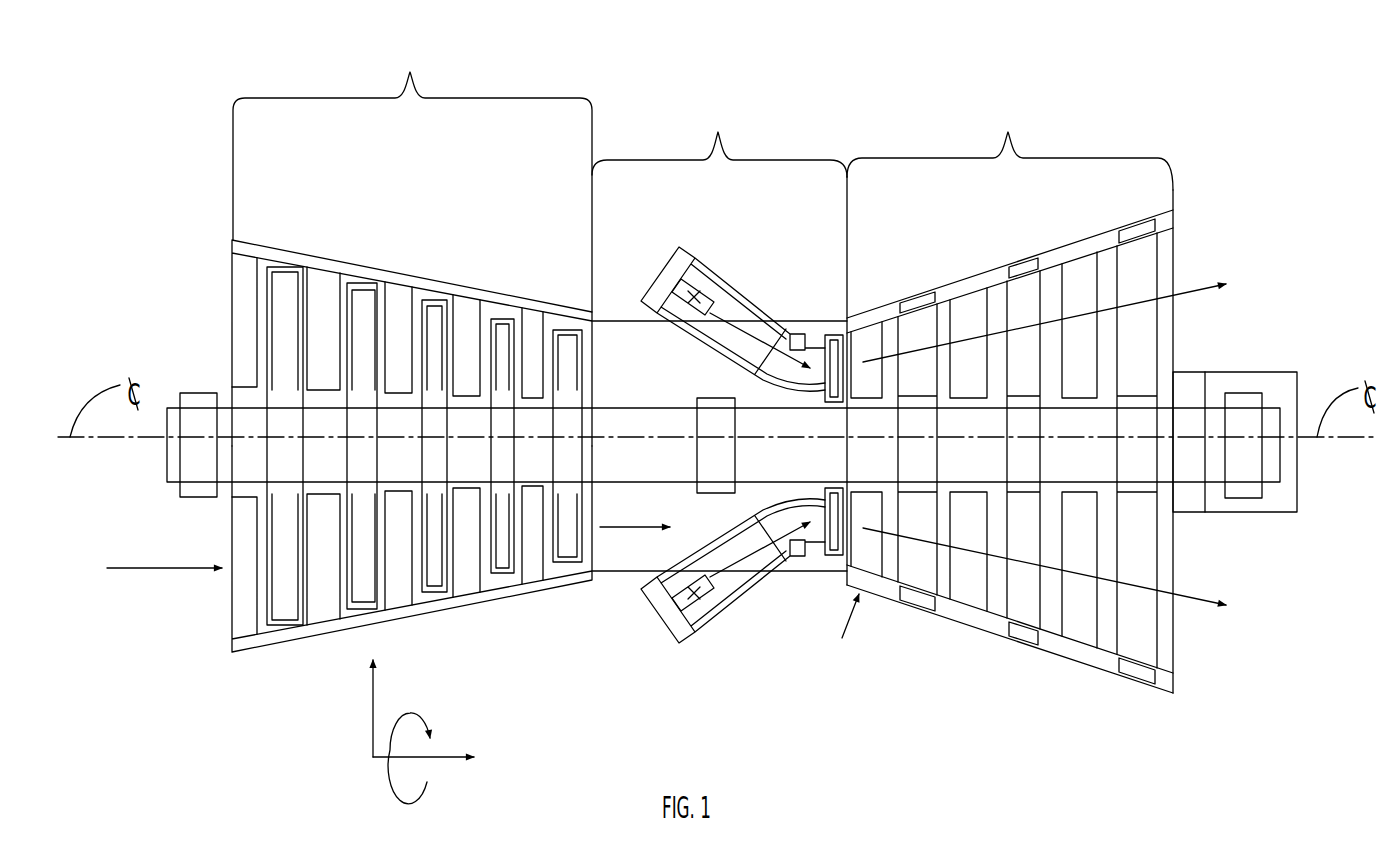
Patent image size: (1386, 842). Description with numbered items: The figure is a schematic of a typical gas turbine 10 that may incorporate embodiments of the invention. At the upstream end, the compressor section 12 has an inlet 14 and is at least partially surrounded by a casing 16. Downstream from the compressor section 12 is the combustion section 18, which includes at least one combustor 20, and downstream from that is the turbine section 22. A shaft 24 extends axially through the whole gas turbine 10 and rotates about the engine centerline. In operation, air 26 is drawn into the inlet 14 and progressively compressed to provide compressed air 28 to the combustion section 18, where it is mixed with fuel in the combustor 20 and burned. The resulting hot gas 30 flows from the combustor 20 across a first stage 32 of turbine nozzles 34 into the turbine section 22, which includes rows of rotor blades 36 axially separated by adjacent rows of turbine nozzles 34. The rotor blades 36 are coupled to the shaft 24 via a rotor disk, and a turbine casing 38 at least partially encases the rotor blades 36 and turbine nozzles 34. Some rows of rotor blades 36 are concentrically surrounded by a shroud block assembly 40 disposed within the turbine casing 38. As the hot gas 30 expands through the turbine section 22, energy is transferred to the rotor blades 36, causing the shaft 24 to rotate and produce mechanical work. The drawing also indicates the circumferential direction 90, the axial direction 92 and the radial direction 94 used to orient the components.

The gas turbine 10 is at (651, 52).
The compressor section 12 is at (412, 333).
The inlet 14 is at (232, 312).
The casing 16 is at (250, 655).
The combustion section 18 is at (719, 330).
The combustor 20 is at (703, 240).
The turbine section 22 is at (1010, 392).
The shaft 24 is at (1213, 407).
The air 26 is at (172, 566).
The compressed air 28 is at (612, 527).
The hot gas 30 is at (745, 328).
The first stage 32 is at (843, 633).
The turbine nozzles 34 is at (950, 280).
The rotor blades 36 is at (913, 553).
The turbine casing 38 is at (1090, 660).
The shroud block assembly 40 is at (985, 300).
The circumferential direction 90 is at (391, 777).
The axial direction 92 is at (440, 747).
The radial direction 94 is at (370, 707).